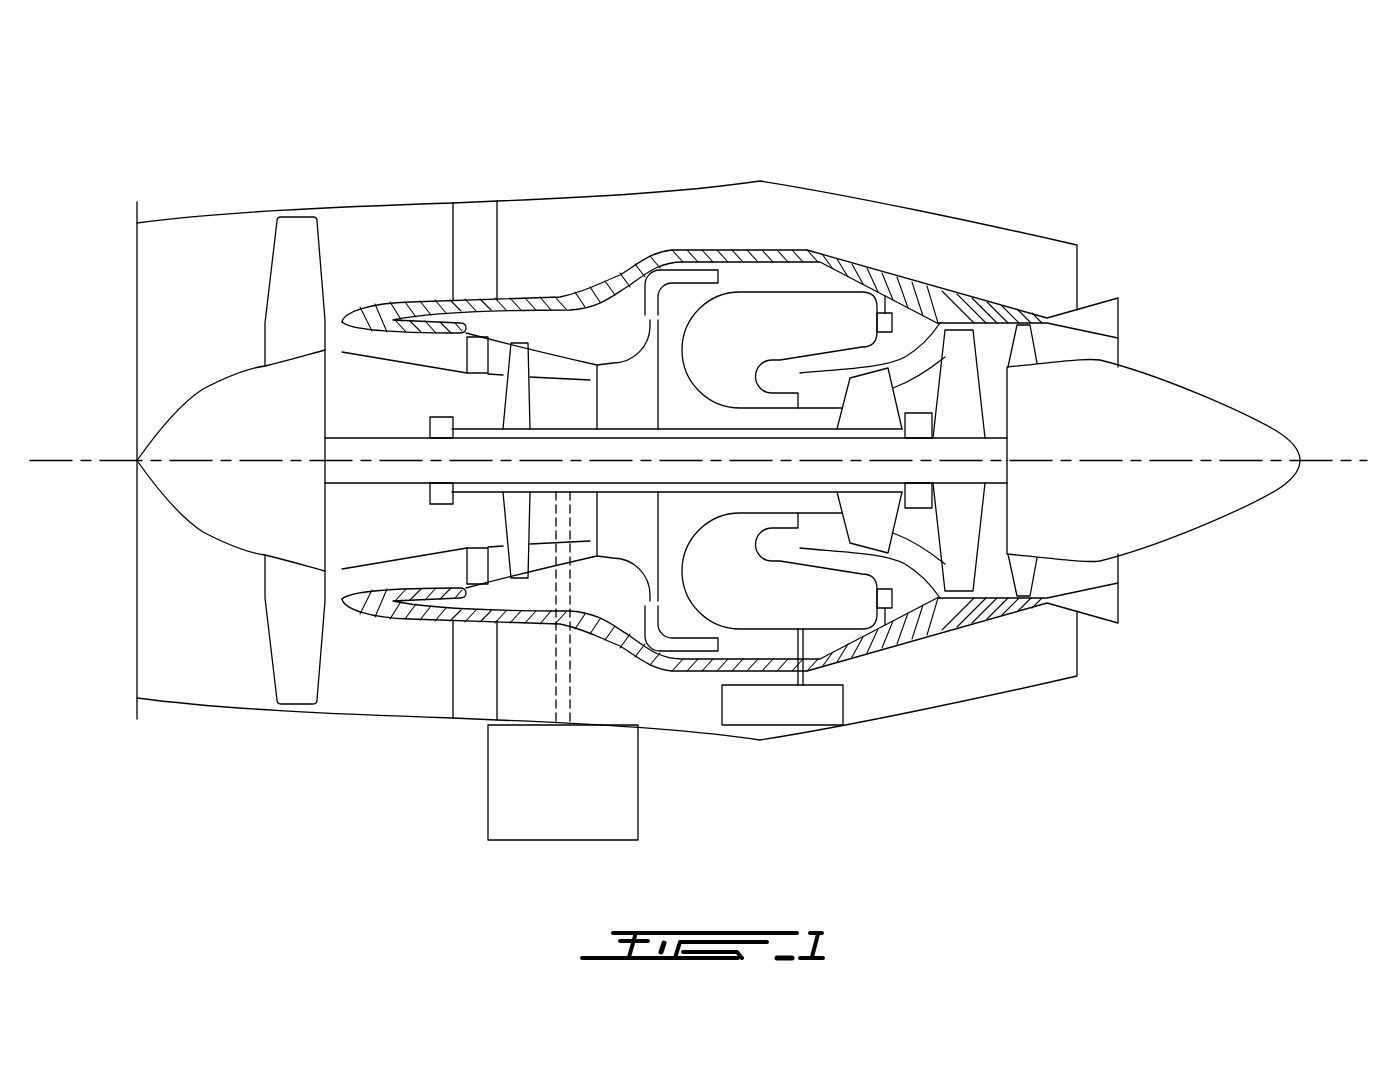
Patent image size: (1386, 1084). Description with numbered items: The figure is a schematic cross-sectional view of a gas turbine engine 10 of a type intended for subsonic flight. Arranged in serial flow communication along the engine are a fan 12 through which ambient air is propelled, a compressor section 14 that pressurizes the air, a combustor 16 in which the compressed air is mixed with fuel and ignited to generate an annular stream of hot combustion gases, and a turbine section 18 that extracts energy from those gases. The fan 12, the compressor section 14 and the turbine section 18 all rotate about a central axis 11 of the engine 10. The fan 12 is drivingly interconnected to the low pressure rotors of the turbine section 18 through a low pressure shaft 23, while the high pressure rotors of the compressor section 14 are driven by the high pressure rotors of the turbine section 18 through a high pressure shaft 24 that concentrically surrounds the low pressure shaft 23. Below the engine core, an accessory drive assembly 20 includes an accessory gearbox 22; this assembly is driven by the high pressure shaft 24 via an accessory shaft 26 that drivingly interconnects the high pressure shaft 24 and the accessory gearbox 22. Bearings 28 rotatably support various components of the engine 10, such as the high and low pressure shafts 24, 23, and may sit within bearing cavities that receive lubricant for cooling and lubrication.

The gas turbine engine 10 is at (975, 160).
The central axis 11 is at (1340, 460).
The fan 12 is at (290, 618).
The compressor section 14 is at (555, 357).
The combustor 16 is at (778, 313).
The turbine section 18 is at (915, 530).
The accessory drive assembly 20 is at (484, 815).
The accessory gearbox 22 is at (545, 815).
The low pressure shaft 23 is at (370, 438).
The high pressure shaft 24 is at (688, 500).
The accessory shaft 26 is at (553, 677).
The bearings 28 is at (438, 508).